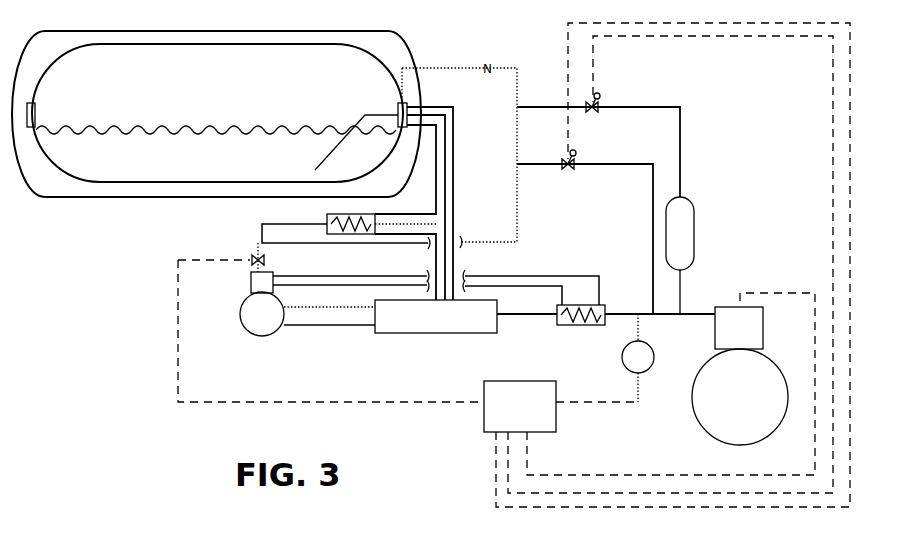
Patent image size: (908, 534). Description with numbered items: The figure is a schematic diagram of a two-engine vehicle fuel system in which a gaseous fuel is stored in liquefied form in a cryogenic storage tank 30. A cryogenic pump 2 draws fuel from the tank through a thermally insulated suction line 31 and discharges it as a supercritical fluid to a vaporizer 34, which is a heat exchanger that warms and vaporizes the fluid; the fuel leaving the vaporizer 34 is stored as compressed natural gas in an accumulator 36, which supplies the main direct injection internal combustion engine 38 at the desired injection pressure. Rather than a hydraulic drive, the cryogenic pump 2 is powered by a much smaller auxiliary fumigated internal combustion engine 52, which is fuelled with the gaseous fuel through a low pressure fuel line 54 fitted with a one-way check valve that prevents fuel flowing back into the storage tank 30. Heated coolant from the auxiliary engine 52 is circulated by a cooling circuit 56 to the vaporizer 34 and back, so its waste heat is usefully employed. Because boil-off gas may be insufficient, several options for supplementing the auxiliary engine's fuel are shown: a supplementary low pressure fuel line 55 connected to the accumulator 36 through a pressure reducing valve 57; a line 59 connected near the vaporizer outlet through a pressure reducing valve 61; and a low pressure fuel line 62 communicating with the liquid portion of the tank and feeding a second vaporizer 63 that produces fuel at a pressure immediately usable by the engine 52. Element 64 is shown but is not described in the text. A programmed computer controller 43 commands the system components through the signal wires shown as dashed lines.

The cryogenic pump 2 is at (436, 316).
The cryogenic storage tank 30 is at (217, 113).
The suction line 31 is at (446, 163).
The vaporizer 34 is at (570, 305).
The accumulator 36 is at (685, 232).
The direct injection internal combustion engine 38 is at (728, 317).
The programmed computer controller 43 is at (667, 265).
The auxiliary fumigated internal combustion engine 52 is at (250, 307).
The fuel line 54 is at (358, 68).
The supplementary low pressure fuel line 55 is at (610, 107).
The cooling circuit 56 is at (568, 274).
The pressure reducing valve 57 is at (596, 98).
The line 59 is at (588, 164).
The pressure reducing valve 61 is at (574, 155).
The low pressure fuel line 62 is at (395, 222).
The second vaporizer 63 is at (327, 215).
The line 64 is at (262, 224).